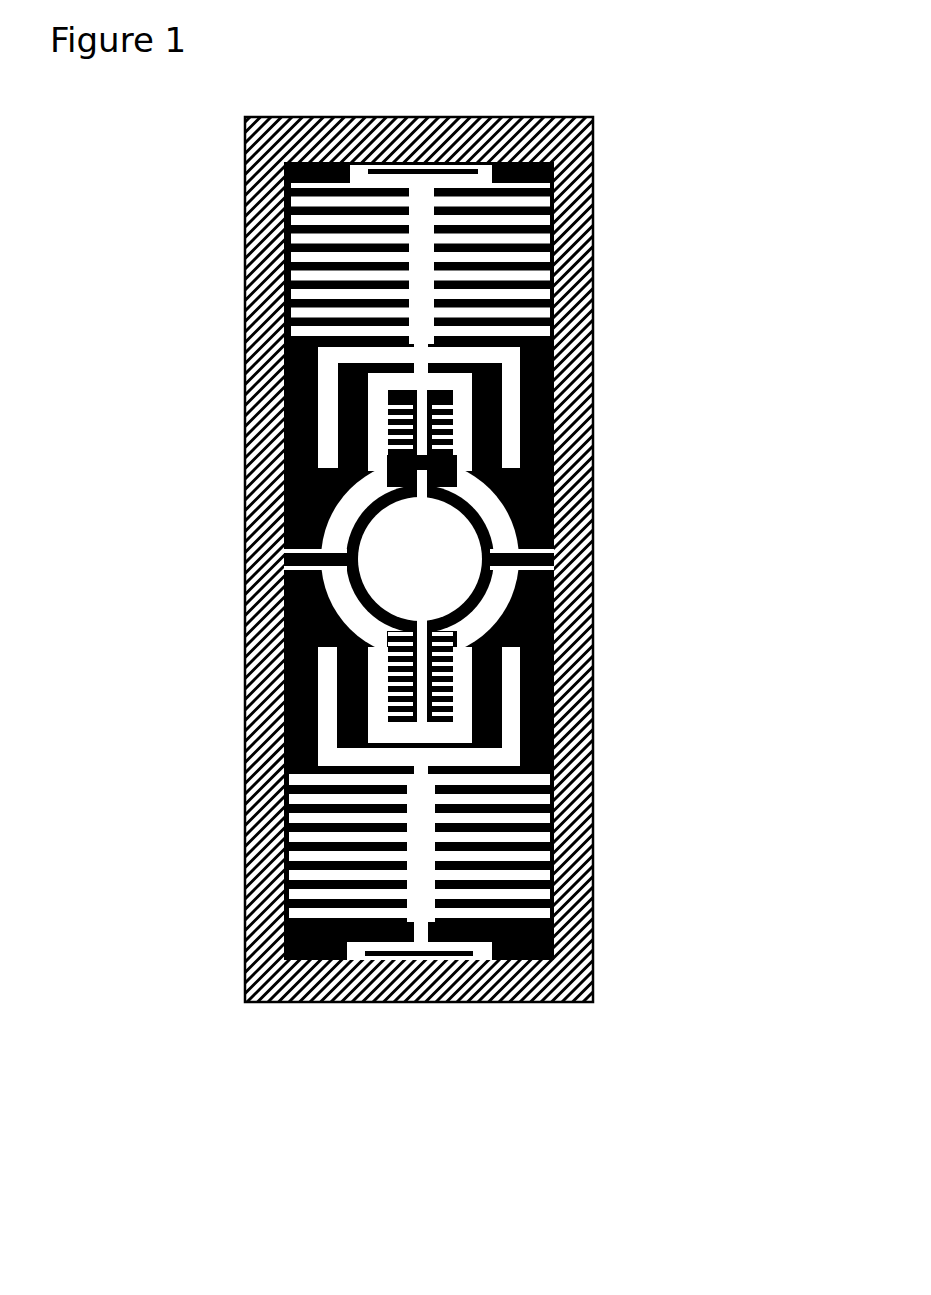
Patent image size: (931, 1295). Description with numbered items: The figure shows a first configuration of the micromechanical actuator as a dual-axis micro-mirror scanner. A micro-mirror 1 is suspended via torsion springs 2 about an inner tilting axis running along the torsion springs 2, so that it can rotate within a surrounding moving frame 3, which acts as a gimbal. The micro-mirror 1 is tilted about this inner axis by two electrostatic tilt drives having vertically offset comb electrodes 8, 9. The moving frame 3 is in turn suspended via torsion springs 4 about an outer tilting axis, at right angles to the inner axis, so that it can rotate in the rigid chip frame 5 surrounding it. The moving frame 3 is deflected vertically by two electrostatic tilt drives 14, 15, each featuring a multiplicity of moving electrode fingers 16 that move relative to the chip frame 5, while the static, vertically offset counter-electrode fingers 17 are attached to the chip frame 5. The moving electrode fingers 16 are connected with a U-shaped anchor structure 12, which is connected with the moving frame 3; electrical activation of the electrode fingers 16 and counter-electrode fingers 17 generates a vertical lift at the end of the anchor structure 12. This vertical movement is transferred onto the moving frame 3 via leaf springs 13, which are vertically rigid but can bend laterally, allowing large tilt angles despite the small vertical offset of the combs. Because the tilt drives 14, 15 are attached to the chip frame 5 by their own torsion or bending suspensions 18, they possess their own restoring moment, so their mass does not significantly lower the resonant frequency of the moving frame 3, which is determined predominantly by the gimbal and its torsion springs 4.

The micro-mirror 1 is at (426, 564).
The torsion springs 2 is at (420, 416).
The moving frame 3 is at (352, 500).
The torsion springs 4 is at (300, 553).
The chip frame 5 is at (592, 642).
The comb electrodes 8 is at (397, 442).
The comb electrodes 9 is at (393, 420).
The U-shaped anchor structure 12 is at (512, 712).
The leaf springs 13 is at (346, 648).
The electrostatic tilt drive 14 is at (424, 876).
The electrostatic tilt drive 15 is at (422, 258).
The electrode fingers 16 is at (540, 876).
The counter-electrode fingers 17 is at (510, 923).
The torsion or bending suspensions 18 is at (380, 945).